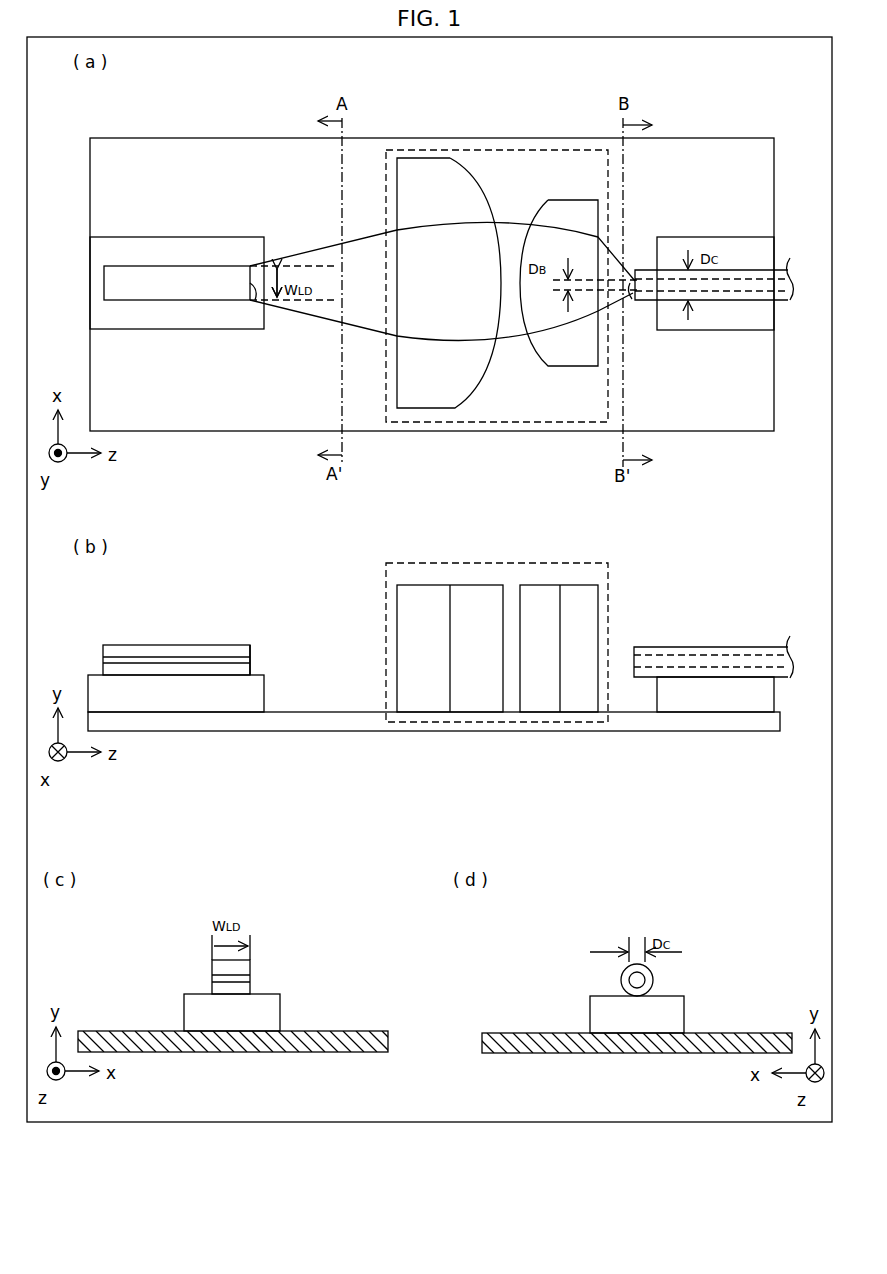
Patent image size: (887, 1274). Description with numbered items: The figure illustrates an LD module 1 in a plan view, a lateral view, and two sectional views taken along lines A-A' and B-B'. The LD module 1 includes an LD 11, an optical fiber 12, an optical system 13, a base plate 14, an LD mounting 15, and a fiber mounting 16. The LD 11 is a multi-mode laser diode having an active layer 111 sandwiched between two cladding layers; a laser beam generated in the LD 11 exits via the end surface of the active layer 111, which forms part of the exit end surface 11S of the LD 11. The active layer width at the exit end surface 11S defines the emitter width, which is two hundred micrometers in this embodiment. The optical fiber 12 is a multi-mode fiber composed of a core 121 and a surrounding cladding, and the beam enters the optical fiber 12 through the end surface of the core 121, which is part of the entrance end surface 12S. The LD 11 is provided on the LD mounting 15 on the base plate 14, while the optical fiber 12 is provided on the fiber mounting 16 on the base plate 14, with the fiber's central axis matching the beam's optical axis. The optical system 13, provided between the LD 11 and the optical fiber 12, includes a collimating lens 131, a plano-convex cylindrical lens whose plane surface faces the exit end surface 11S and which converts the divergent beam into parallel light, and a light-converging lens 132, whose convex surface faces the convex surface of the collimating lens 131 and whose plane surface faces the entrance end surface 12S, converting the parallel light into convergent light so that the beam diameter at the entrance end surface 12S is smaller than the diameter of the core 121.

The LD module 1 is at (718, 98).
The LD 11 is at (175, 300).
The end surface 11S is at (251, 300).
The active layer 111 is at (197, 657).
The optical fiber 12 is at (712, 300).
The end surface 12S is at (631, 302).
The core 121 is at (754, 303).
The optical system 13 is at (520, 422).
The collimating lens 131 is at (420, 408).
The light-converging lens 132 is at (573, 366).
The base plate 14 is at (492, 138).
The LD mounting 15 is at (175, 237).
The fiber mounting 16 is at (716, 237).